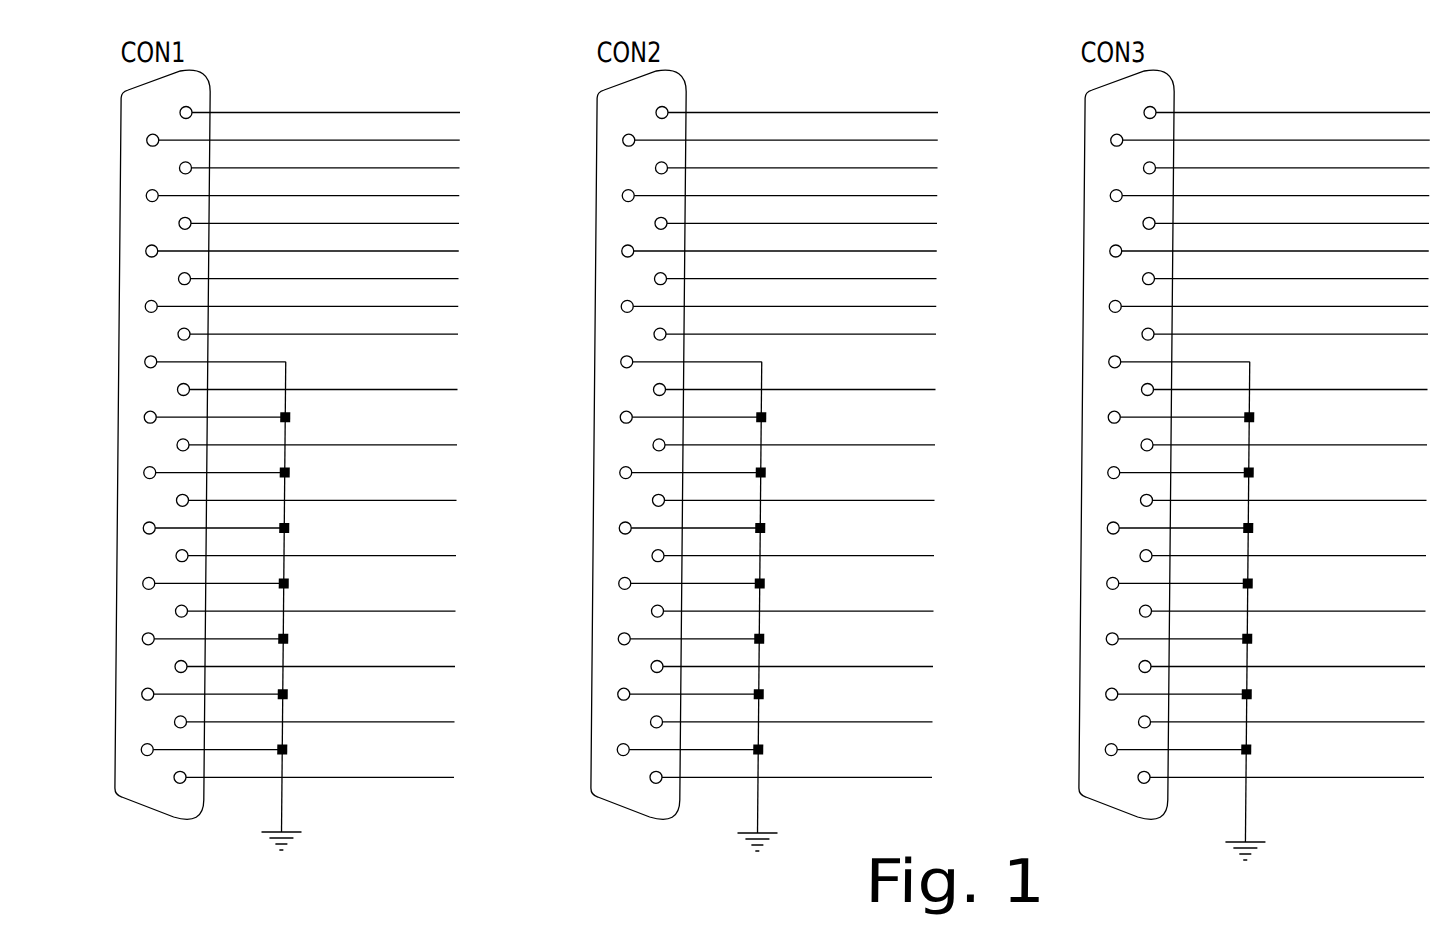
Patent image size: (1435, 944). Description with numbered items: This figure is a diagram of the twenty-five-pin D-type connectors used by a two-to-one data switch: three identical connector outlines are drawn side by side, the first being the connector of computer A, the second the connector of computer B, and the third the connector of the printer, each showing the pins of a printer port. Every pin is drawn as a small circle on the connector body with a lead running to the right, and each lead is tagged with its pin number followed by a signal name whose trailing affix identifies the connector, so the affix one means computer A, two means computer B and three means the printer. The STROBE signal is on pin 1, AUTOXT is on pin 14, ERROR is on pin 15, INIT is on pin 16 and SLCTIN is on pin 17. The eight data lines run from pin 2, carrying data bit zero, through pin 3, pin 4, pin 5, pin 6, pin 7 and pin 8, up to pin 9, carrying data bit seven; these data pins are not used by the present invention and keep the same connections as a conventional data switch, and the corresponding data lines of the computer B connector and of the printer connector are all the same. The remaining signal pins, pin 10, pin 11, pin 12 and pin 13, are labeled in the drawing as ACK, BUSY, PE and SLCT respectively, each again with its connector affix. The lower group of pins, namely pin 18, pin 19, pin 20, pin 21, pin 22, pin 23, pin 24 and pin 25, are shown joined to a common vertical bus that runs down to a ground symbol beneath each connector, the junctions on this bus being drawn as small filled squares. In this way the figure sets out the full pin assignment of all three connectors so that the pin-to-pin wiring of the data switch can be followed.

The pin 1 (STROBE) 1 is at (805, 101).
The pin 2 (DA0) 2 is at (804, 156).
The pin 3 (DA1) 3 is at (804, 211).
The pin 4 (DA2) 4 is at (803, 267).
The pin 5 (DA3) 5 is at (803, 322).
The pin 6 (DA4) 6 is at (802, 378).
The pin 7 (DA5) 7 is at (802, 433).
The pin 8 (DA6) 8 is at (801, 488).
The pin 9 (DA7) 9 is at (801, 544).
The pin 10 (ACK) 10 is at (800, 599).
The pin 11 (BUSY) 11 is at (800, 655).
The pin 12 (PE) 12 is at (799, 710).
The pin 13 (SLCT) 13 is at (799, 765).
The pin 14 (AUTOXT) 14 is at (788, 128).
The pin 15 (ERROR) 15 is at (787, 184).
The pin 16 (INIT) 16 is at (787, 239).
The pin 17 (SLCTIN) 17 is at (786, 294).
The pin 18 is at (697, 351).
The pin 19 is at (699, 406).
The pin 20 is at (699, 462).
The pin 21 is at (698, 517).
The pin 22 is at (698, 572).
The pin 23 is at (697, 628).
The pin 24 is at (697, 683).
The pin 25 is at (696, 739).